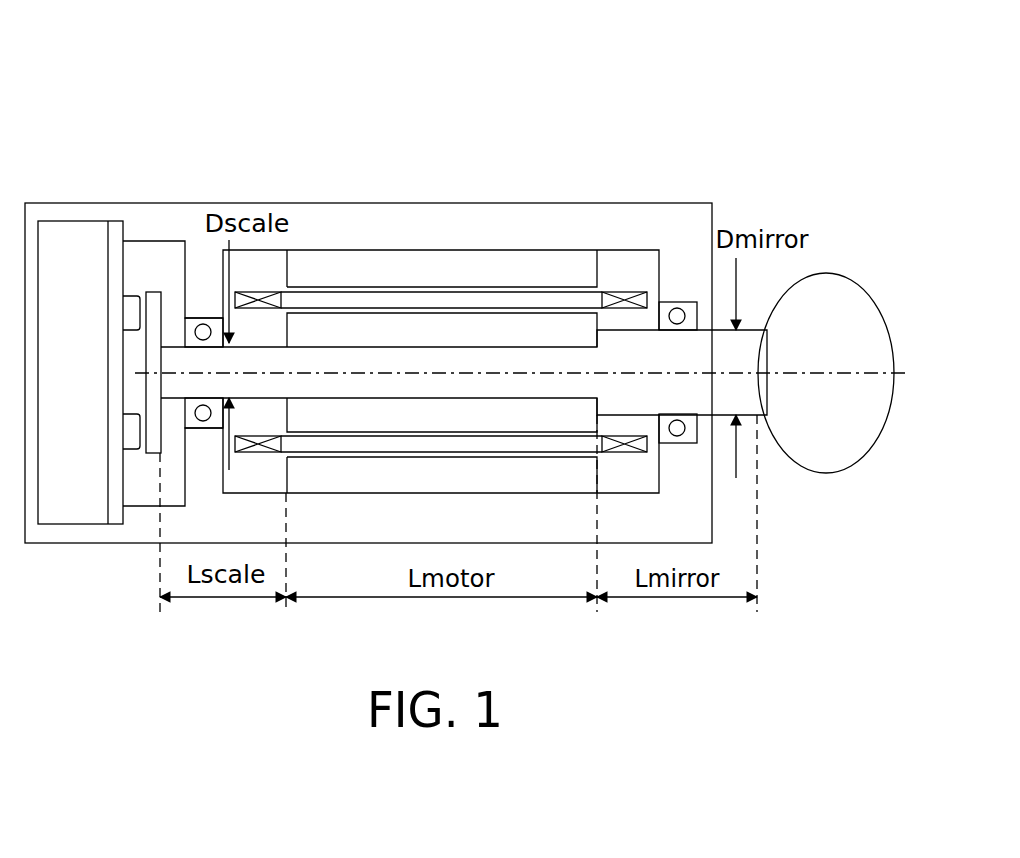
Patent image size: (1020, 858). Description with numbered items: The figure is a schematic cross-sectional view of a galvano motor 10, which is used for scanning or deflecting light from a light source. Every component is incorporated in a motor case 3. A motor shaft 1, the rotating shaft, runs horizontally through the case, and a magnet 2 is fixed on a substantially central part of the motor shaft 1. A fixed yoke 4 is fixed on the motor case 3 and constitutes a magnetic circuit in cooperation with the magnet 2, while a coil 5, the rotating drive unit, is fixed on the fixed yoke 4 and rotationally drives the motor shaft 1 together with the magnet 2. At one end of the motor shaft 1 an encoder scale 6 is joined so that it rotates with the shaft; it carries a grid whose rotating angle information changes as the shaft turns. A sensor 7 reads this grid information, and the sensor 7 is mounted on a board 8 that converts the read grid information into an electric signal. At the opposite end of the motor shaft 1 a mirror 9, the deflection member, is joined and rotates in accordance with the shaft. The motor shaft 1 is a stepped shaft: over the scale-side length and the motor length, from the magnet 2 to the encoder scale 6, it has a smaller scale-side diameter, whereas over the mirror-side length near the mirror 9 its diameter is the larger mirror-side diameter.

The motor shaft 1 is at (512, 357).
The magnet 2 is at (367, 330).
The motor case 3 is at (408, 218).
The fixed yoke 4 is at (477, 264).
The coil 5 is at (630, 297).
The encoder scale 6 is at (154, 307).
The sensor 7 is at (133, 304).
The board 8 is at (114, 275).
The mirror 9 is at (847, 301).
The galvano motor 10 is at (640, 139).